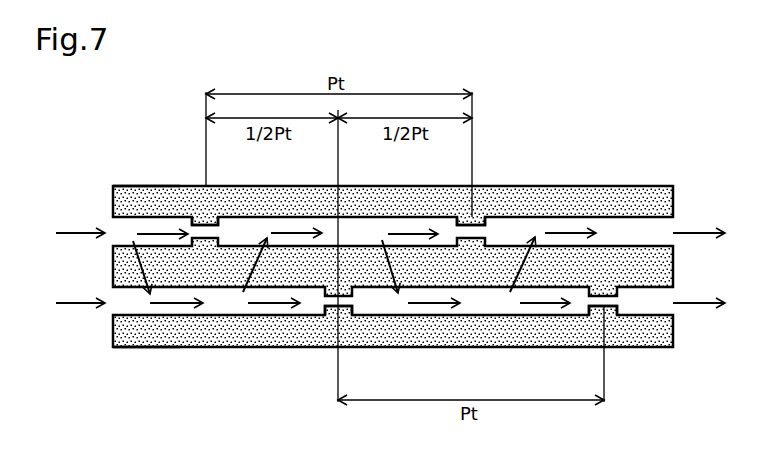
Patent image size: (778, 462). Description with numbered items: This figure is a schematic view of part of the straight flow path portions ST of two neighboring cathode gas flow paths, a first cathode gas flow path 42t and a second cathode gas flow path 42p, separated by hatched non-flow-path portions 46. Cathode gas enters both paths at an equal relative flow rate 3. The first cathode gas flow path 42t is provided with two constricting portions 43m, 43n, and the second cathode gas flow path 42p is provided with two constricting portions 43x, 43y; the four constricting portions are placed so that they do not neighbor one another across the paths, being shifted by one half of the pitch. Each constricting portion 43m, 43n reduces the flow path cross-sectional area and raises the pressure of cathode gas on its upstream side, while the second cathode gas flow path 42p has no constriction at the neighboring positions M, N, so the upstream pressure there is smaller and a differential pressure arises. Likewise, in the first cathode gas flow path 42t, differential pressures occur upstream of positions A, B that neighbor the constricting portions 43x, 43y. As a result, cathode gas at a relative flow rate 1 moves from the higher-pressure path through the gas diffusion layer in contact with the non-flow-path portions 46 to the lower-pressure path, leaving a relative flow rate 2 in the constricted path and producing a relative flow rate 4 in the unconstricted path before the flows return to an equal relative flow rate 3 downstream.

The non-flow-path portion 46 is at (656, 203).
The first cathode gas flow path 42t is at (130, 185).
The second cathode gas flow path 42p is at (128, 302).
The constricting portion 43m is at (197, 224).
The constricting portion 43n is at (481, 224).
The constricting portion 43x is at (333, 306).
The constricting portion 43y is at (610, 307).
The straight flow path portion ST is at (162, 139).
The position A is at (342, 185).
The position B is at (605, 235).
The position M is at (207, 302).
The position N is at (470, 302).
The relative flow rate 1 is at (334, 265).
The relative flow rate 2 is at (287, 223).
The relative flow rate 3 is at (390, 257).
The relative flow rate 4 is at (305, 292).